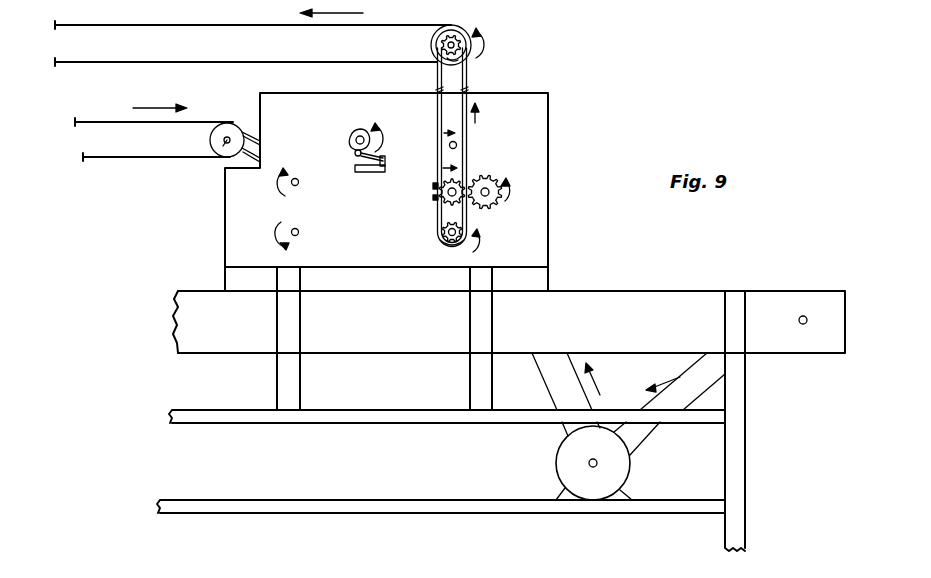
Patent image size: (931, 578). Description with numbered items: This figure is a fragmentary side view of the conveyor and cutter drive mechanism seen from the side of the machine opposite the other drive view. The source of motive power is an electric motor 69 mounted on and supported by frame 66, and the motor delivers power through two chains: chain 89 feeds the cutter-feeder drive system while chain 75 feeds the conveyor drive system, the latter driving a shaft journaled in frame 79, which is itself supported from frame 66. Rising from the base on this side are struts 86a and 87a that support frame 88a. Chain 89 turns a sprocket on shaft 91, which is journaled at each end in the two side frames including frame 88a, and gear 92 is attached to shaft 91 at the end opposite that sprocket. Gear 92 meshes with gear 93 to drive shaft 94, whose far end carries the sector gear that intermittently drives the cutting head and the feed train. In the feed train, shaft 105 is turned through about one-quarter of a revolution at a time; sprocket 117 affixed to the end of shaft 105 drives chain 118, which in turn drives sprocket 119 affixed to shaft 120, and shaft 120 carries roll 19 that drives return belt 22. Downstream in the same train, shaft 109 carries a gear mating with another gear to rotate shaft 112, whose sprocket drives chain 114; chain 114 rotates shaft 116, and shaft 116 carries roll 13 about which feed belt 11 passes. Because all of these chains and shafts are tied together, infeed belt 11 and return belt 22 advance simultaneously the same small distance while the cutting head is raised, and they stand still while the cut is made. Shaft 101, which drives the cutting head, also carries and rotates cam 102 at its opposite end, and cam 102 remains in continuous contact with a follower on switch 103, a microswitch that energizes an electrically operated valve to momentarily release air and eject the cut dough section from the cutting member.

The return belt 22 is at (183, 25).
The feed belt 11 is at (98, 121).
The roll 13 is at (222, 141).
The chain 114 is at (253, 135).
The shaft 116 is at (222, 146).
The frame 88a is at (310, 120).
The shaft 101 is at (358, 129).
The cam 102 is at (350, 143).
The switch 103 is at (371, 172).
The shaft 112 is at (299, 180).
The shaft 109 is at (299, 232).
The roll 19 is at (432, 45).
The shaft 120 is at (453, 43).
The sprocket 119 is at (457, 61).
The chain 118 is at (468, 89).
The gear 93 is at (445, 185).
The shaft 94 is at (447, 196).
The gear 92 is at (488, 177).
The shaft 91 is at (498, 203).
The shaft 105 is at (443, 233).
The sprocket 117 is at (447, 246).
The frame 79 is at (382, 327).
The strut 87a is at (300, 384).
The strut 86a is at (470, 388).
The frame 66 is at (328, 424).
The chain 89 is at (546, 392).
The chain 75 is at (650, 441).
The electric motor 69 is at (603, 490).